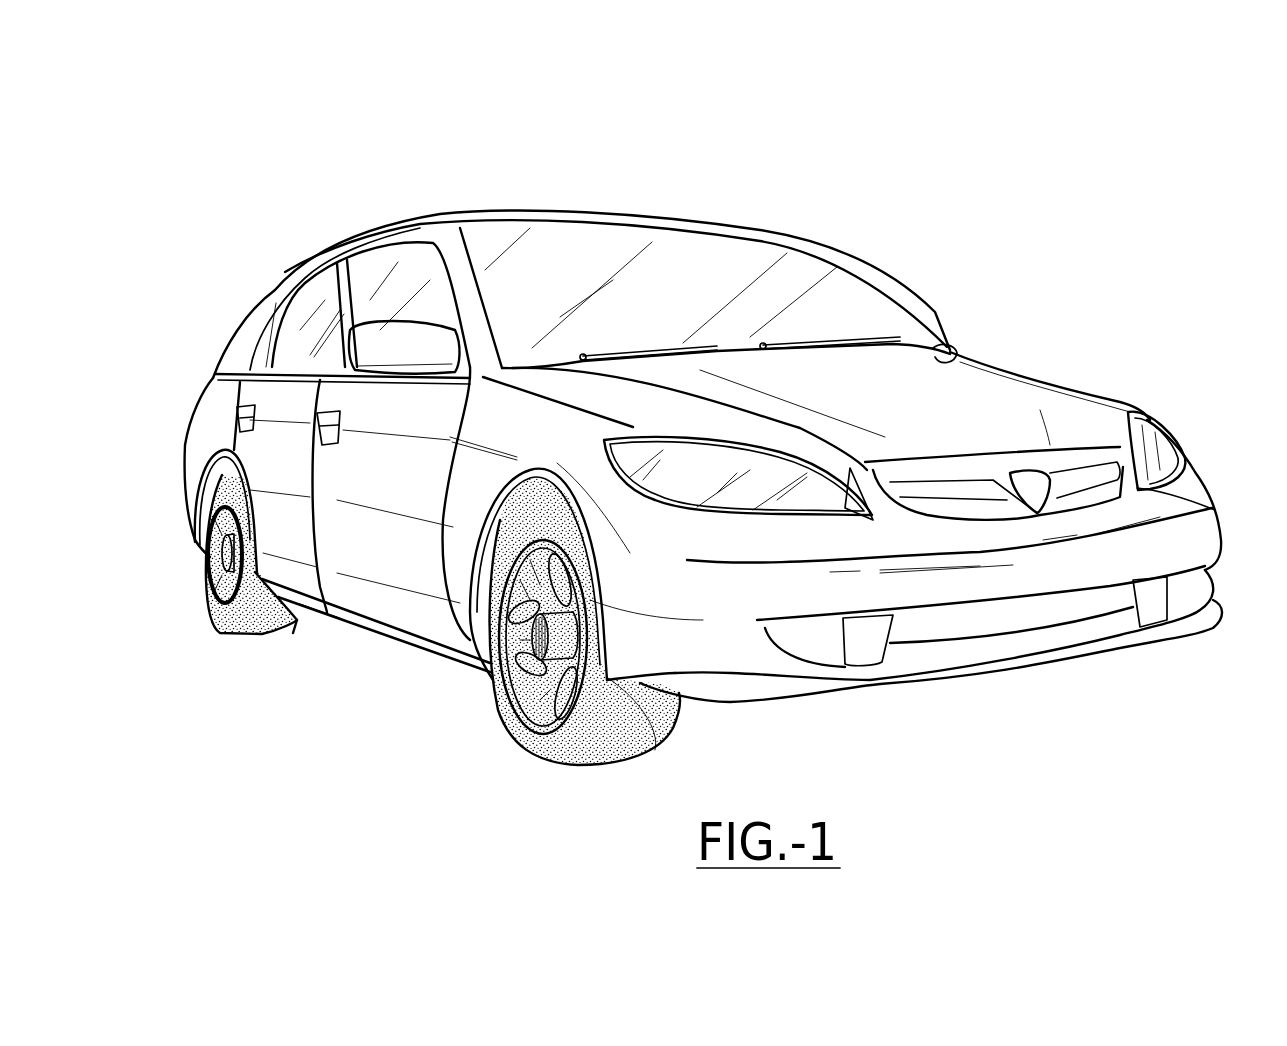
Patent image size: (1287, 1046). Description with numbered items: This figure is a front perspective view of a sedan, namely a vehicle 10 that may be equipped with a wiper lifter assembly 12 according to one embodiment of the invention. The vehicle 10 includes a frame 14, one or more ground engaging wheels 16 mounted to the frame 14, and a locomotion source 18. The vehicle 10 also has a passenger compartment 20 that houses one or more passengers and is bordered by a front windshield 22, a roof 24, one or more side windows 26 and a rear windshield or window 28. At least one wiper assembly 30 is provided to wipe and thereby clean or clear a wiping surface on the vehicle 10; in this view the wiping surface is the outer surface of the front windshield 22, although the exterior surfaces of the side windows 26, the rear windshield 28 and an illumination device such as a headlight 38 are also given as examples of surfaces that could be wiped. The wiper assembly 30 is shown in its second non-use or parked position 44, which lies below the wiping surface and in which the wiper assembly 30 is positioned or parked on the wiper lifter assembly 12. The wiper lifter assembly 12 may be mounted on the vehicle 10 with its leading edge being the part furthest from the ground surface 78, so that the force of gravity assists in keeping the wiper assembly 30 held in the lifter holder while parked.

The vehicle 10 is at (1020, 247).
The wiper lifter assembly 12 is at (896, 350).
The frame 14 is at (370, 640).
The ground engaging wheels 16 is at (570, 750).
The locomotion source 18 is at (1150, 388).
The passenger compartment 20 is at (651, 188).
The front windshield 22 is at (720, 251).
The roof 24 is at (528, 211).
The side windows 26 is at (387, 267).
The rear windshield 28 is at (277, 287).
The wiper assembly 30 is at (676, 363).
The headlight 38 is at (1158, 441).
The parked position 44 is at (762, 325).
The ground surface 78 is at (623, 783).